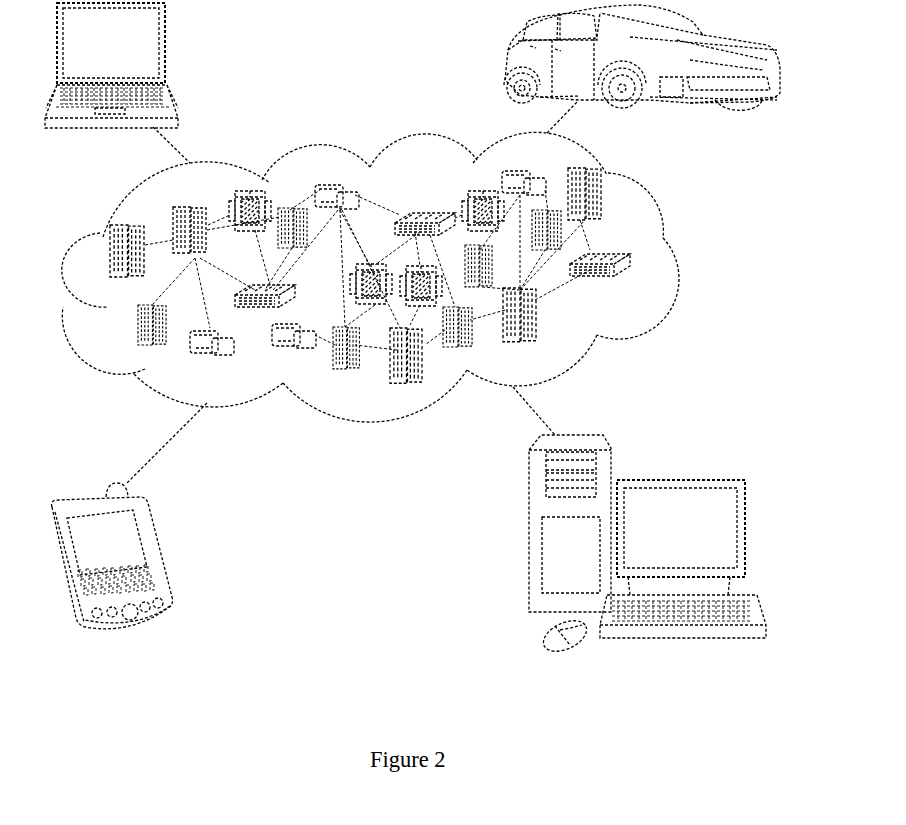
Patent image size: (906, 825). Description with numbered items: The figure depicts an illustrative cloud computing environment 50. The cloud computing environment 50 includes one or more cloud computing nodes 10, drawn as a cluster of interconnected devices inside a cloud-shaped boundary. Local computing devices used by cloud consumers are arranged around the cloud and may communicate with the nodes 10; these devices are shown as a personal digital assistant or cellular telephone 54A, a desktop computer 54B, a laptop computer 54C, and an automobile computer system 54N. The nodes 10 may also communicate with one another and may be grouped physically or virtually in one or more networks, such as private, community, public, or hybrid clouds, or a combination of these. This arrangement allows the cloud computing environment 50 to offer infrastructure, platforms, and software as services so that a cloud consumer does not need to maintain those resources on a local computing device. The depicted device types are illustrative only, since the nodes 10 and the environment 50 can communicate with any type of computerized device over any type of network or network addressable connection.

The cloud computing environment 50 is at (680, 253).
The cloud computing nodes 10 is at (633, 283).
The personal digital assistant (PDA) or cellular telephone 54A is at (155, 550).
The desktop computer 54B is at (690, 462).
The laptop computer 54C is at (167, 50).
The automobile computer system 54N is at (508, 63).